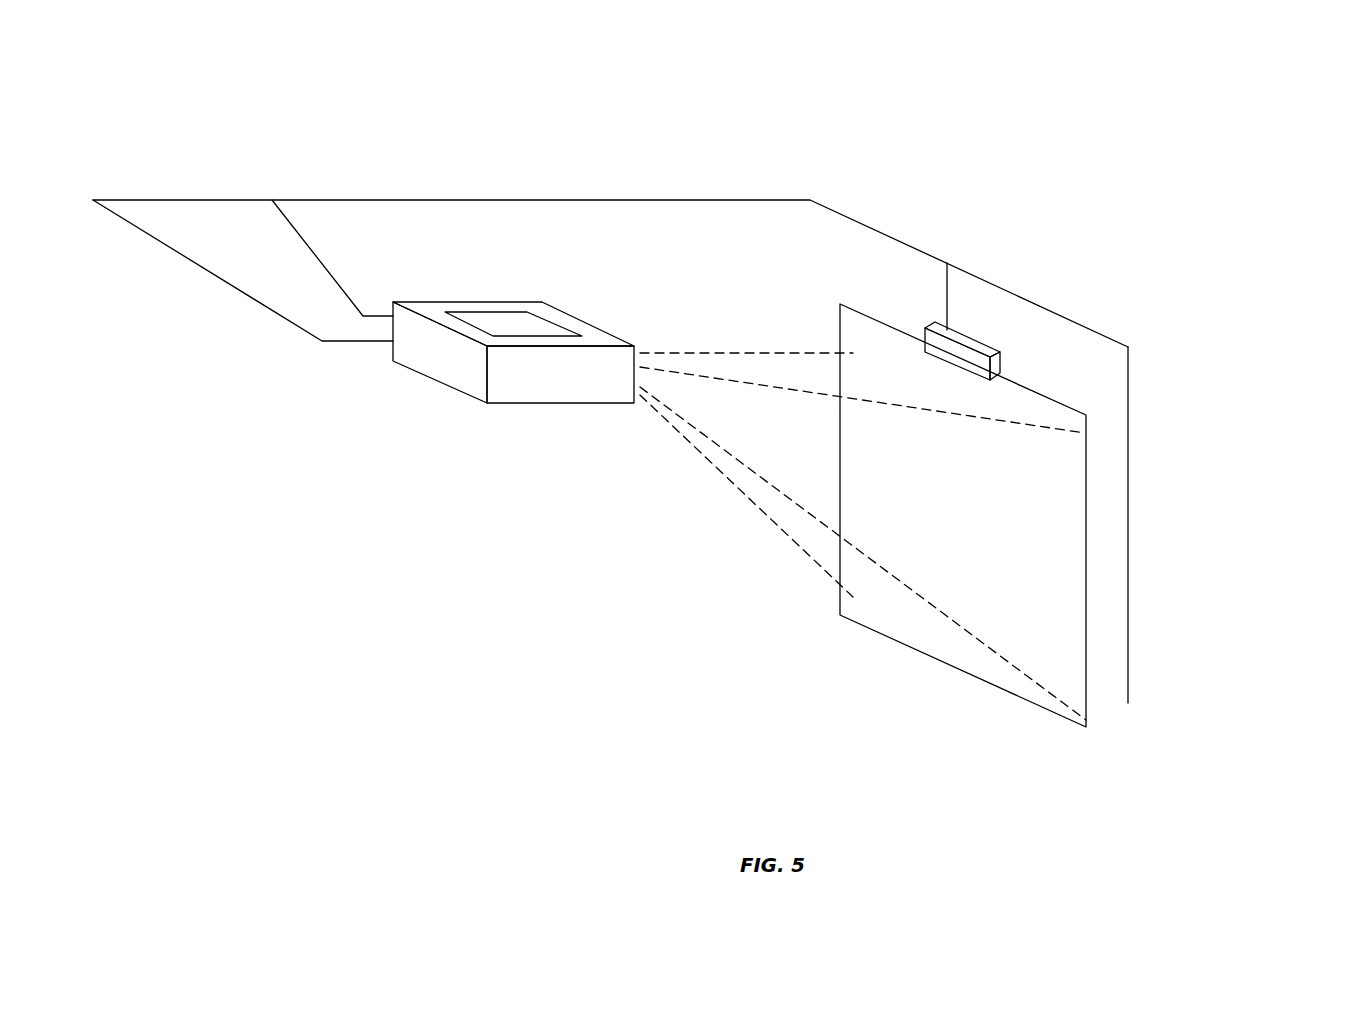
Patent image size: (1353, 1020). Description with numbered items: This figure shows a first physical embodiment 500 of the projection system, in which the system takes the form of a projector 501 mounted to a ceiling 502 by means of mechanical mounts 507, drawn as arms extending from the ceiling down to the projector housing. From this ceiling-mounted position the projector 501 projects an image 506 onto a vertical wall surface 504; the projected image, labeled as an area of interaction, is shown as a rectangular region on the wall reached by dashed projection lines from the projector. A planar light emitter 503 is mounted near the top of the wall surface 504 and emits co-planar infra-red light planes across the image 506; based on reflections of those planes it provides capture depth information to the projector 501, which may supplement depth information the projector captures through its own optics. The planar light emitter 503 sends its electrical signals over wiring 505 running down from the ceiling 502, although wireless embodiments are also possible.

The first physical embodiment 500 is at (795, 63).
The projector 501 is at (535, 404).
The ceiling 502 is at (767, 200).
The planar light emitter 503 is at (982, 347).
The vertical wall surface 504 is at (1108, 380).
The wiring 505 is at (945, 291).
The image 506 is at (1050, 575).
The mechanical mounts 507 is at (252, 262).